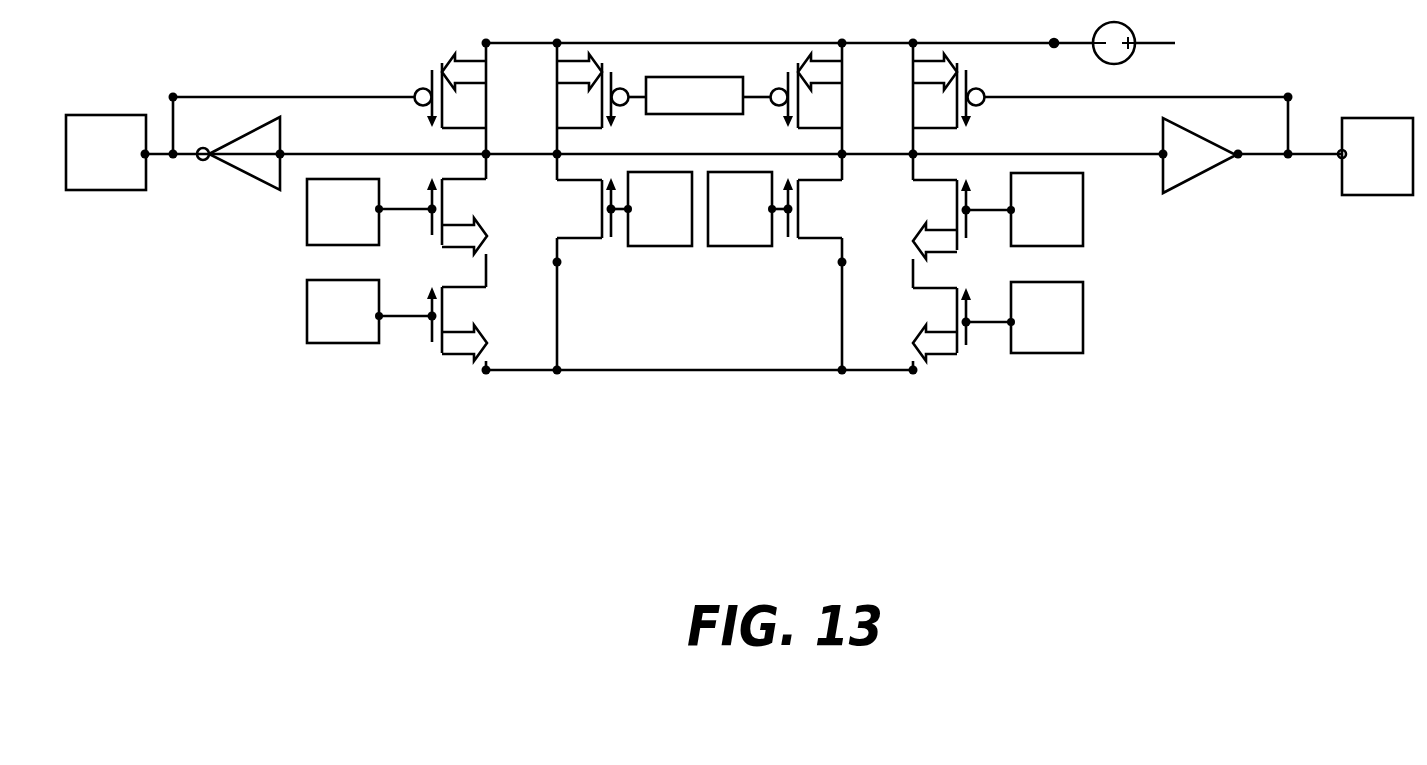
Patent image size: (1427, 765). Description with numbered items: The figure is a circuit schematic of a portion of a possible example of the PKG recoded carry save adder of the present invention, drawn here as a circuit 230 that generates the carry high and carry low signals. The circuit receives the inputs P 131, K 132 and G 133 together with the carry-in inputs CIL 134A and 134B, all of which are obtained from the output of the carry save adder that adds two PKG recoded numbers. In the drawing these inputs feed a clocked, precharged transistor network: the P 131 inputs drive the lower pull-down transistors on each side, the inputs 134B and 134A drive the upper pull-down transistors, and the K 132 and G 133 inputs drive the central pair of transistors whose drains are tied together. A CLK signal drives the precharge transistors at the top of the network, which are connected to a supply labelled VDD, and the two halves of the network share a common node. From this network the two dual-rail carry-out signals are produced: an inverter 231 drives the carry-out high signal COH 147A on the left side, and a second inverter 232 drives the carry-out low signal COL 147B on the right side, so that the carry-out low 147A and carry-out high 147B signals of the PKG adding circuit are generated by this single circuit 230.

The sense amplifier / latch circuit 230 is at (262, 227).
The inverter 231 is at (275, 166).
The inverter 232 is at (1212, 167).
The carry-out low (COL) signal 147A is at (80, 181).
The carry-out high (COH) signal 147B is at (1352, 184).
The CIL input 134B is at (318, 240).
The CIL input 134A is at (1021, 239).
The P input 131 is at (323, 339).
The G input 133 is at (640, 236).
The K input 132 is at (720, 236).